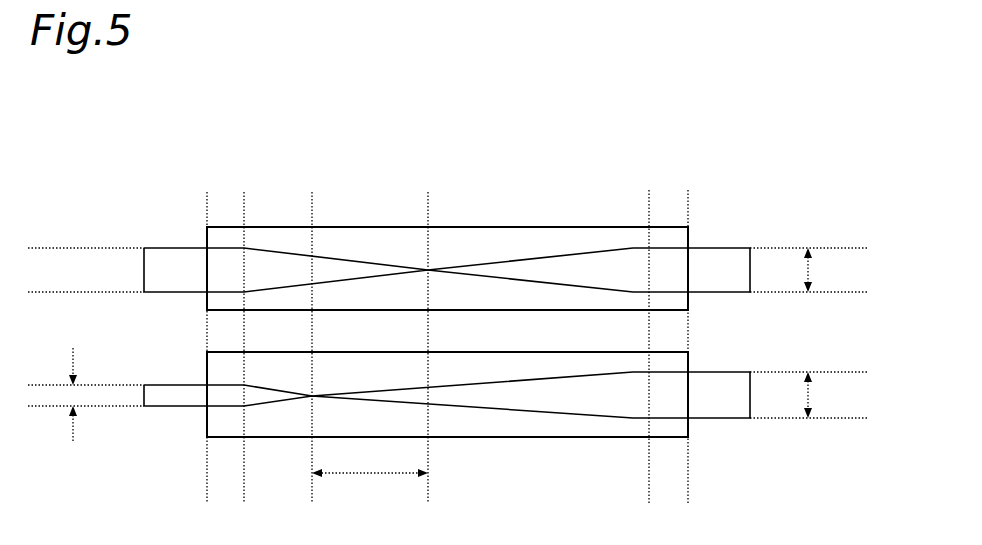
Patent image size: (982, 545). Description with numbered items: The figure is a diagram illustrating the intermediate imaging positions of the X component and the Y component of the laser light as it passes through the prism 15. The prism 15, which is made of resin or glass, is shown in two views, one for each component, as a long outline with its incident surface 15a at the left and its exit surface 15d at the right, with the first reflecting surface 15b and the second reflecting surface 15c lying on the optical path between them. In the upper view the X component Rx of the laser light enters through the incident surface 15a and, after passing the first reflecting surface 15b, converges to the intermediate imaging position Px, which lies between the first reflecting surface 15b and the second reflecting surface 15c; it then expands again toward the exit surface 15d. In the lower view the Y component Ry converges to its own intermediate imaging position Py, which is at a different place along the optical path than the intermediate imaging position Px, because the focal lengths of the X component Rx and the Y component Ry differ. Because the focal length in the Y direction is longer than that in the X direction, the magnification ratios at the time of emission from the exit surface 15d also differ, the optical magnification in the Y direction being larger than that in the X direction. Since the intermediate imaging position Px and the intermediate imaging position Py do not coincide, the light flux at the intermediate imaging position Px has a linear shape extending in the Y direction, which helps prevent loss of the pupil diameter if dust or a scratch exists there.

The prism 15 is at (537, 227).
The incident surface 15a is at (207, 192).
The first reflecting surface 15b is at (244, 192).
The second reflecting surface 15c is at (649, 190).
The exit surface 15d is at (688, 190).
The X component Rx is at (187, 246).
The Y component Ry is at (187, 382).
The intermediate imaging position in the X direction Px is at (428, 268).
The intermediate imaging position in the Y direction Py is at (312, 400).